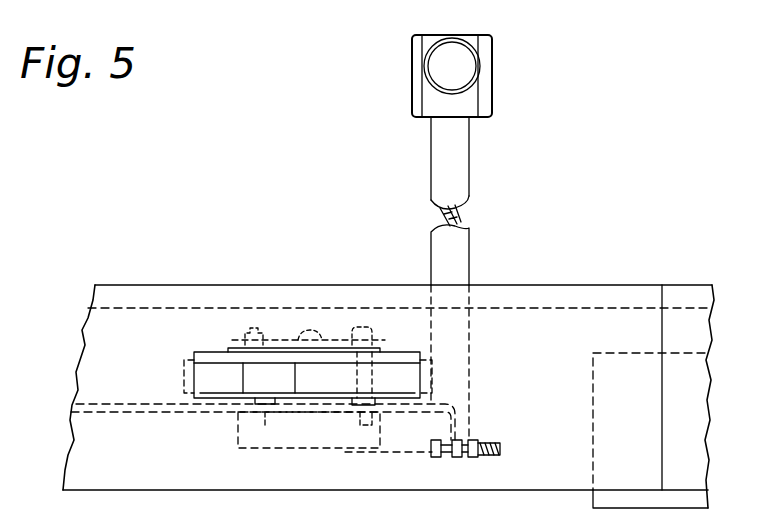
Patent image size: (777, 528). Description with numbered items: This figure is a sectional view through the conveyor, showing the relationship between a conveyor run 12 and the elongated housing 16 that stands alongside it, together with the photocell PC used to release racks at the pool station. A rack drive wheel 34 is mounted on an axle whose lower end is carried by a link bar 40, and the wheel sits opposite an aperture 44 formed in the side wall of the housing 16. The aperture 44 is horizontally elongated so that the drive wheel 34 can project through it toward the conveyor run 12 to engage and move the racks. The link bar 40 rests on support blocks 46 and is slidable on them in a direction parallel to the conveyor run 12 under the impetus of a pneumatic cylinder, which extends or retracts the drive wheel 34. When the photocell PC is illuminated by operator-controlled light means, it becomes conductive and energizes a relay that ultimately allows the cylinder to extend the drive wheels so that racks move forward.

The photocell PC is at (493, 75).
The conveyor run 12 is at (536, 318).
The elongated housing 16 is at (200, 287).
The rack drive wheel 34 is at (393, 368).
The link bar 40 is at (140, 413).
The aperture 44 is at (410, 351).
The support block 46 is at (266, 433).